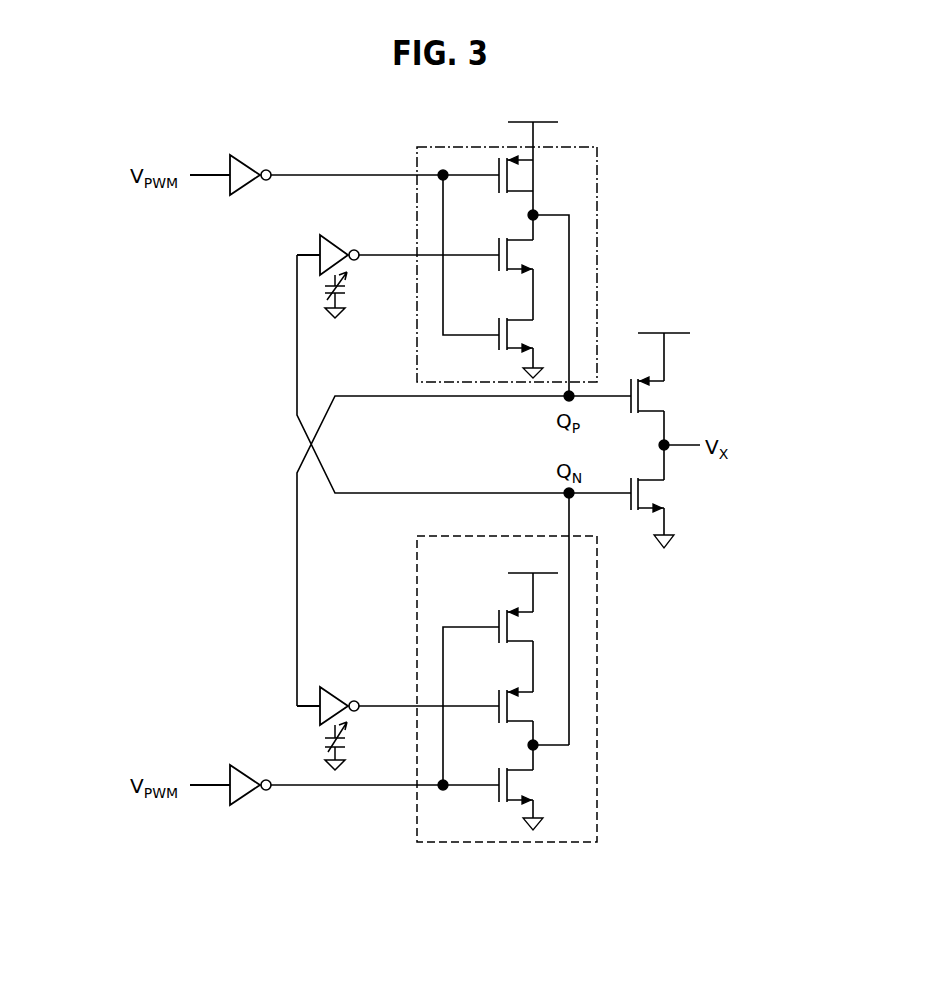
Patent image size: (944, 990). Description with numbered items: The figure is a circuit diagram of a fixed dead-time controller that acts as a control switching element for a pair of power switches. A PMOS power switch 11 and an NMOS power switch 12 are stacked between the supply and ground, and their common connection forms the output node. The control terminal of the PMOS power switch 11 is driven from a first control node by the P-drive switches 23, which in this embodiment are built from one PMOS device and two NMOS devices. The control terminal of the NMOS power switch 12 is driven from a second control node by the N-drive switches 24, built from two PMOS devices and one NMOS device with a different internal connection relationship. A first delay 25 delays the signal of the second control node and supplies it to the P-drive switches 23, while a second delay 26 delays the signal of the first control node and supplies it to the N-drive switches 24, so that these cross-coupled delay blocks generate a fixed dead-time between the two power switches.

The PMOS power switch 11 is at (700, 398).
The NMOS power switch 12 is at (700, 495).
The P-drive switches 23 is at (599, 149).
The N-drive switches 24 is at (599, 612).
The first delay 25 is at (240, 233).
The second delay 26 is at (240, 724).